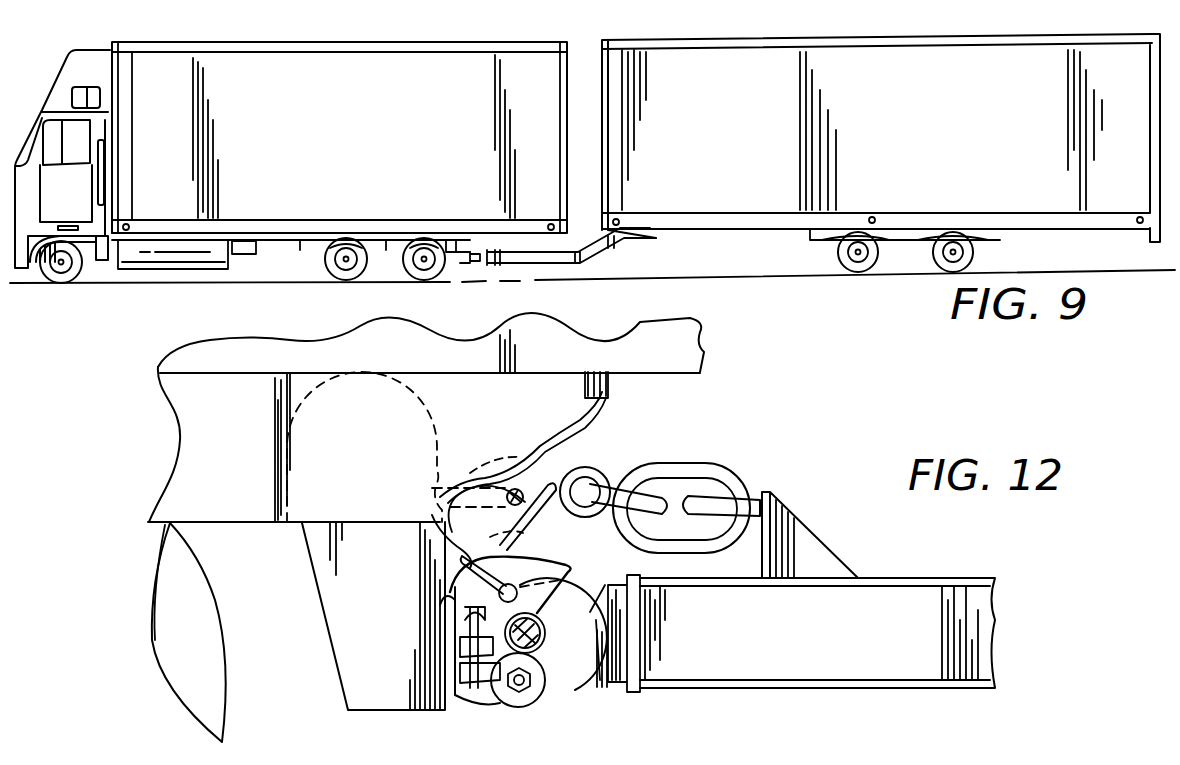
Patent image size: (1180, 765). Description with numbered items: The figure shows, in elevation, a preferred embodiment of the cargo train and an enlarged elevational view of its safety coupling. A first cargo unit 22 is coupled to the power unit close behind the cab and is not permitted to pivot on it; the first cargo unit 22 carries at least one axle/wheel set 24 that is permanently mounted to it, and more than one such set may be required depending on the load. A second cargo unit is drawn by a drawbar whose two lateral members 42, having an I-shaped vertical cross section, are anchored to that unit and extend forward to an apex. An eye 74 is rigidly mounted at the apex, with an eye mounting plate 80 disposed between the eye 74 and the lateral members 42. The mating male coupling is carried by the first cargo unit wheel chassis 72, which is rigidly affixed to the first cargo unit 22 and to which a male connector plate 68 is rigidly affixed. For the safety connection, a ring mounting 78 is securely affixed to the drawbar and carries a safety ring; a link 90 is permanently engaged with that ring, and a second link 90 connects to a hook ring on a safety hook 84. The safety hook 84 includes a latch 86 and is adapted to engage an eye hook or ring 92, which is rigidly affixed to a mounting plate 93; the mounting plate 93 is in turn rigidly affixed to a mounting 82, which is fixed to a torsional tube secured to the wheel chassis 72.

In FIG. 9, the first cargo unit 22 is at (404, 50).
In FIG. 12, the first cargo unit 22 is at (524, 346).
In FIG. 12, the axle/wheel set 24 is at (190, 592).
In FIG. 12, the lateral members 42 is at (852, 650).
In FIG. 12, the male connector plate 68 is at (645, 484).
In FIG. 9, the first cargo unit wheel chassis 72 is at (447, 240).
In FIG. 12, the first cargo unit wheel chassis 72 is at (246, 458).
In FIG. 12, the eye 74 is at (600, 660).
In FIG. 12, the ring mounting 78 is at (790, 506).
In FIG. 12, the eye mounting plate 80 is at (628, 690).
In FIG. 9, the mounting 82 is at (466, 264).
In FIG. 12, the mounting 82 is at (352, 684).
In FIG. 12, the safety hook 84 is at (545, 466).
In FIG. 12, the latch 86 is at (598, 470).
In FIG. 12, the link 90 is at (712, 476).
In FIG. 12, the eye hook or ring 92 is at (515, 490).
In FIG. 12, the mounting plate 93 is at (440, 496).